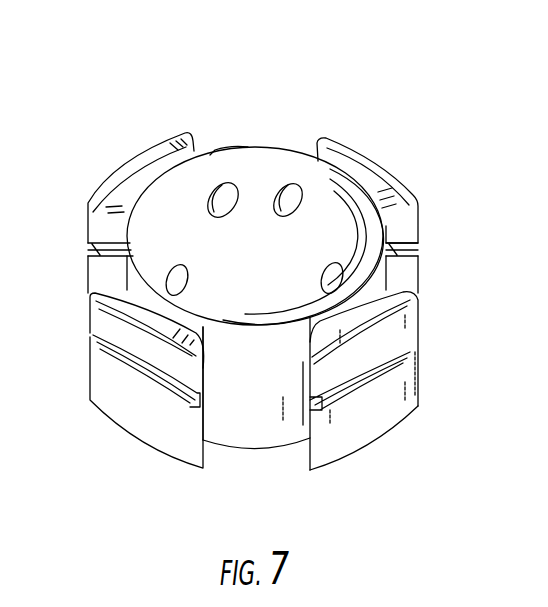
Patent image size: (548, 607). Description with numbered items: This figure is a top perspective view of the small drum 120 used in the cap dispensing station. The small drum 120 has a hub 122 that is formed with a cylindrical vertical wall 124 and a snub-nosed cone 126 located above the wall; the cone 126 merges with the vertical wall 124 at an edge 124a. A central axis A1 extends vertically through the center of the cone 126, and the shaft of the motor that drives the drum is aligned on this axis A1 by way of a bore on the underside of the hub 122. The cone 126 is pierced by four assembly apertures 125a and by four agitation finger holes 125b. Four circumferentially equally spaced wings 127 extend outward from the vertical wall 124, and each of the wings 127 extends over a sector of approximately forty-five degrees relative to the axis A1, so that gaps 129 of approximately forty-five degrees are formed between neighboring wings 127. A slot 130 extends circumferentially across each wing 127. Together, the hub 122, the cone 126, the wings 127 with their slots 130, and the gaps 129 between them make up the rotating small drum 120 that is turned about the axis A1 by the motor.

The central axis A1 is at (253, 152).
The small drum 120 is at (394, 139).
The hub 122 is at (320, 180).
The cylindrical vertical wall 124 is at (288, 440).
The edge 124a is at (233, 323).
The assembly apertures 125a is at (286, 188).
The agitation finger holes 125b is at (326, 279).
The snub-nosed cone 126 is at (263, 157).
The wings 127 is at (131, 181).
The gaps 129 is at (218, 146).
The slot 130 is at (410, 346).